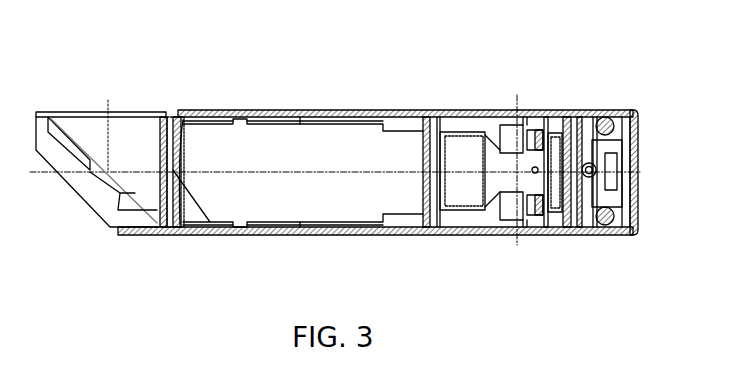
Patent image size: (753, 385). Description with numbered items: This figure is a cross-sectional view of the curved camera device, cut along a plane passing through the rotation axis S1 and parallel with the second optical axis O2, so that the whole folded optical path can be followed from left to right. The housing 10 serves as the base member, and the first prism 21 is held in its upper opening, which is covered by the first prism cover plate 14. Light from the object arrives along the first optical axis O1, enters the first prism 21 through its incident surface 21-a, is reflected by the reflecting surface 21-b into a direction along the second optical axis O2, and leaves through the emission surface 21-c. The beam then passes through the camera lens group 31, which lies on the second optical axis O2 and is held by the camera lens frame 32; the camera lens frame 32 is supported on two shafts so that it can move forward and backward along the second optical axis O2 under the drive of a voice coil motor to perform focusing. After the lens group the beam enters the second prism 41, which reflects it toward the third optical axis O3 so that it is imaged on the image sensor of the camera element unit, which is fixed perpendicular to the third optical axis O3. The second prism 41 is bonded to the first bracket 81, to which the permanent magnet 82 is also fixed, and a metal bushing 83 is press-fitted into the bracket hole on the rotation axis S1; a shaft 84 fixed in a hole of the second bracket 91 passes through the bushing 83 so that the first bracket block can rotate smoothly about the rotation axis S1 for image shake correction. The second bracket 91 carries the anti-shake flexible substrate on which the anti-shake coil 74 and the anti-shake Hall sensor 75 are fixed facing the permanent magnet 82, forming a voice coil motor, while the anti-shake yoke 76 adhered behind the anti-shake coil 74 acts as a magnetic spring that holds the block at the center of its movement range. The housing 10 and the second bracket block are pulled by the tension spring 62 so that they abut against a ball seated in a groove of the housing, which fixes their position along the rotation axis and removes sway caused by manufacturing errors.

The housing 10 is at (166, 215).
The first prism cover plate 14 is at (82, 188).
The first prism 21 is at (138, 122).
The incident surface 21-a is at (118, 128).
The reflecting surface 21-b is at (103, 210).
The emission surface 21-c is at (197, 222).
The camera lens group 31 is at (299, 140).
The camera lens frame 32 is at (364, 115).
The second prism 41 is at (460, 155).
The anti-shake coil 74 is at (576, 145).
The anti-shake Hall sensor 75 is at (548, 215).
The anti-shake yoke 76 is at (580, 203).
The first bracket 81 is at (500, 150).
The permanent magnet 82 is at (556, 145).
The bushing 83 is at (505, 140).
The shaft 84 is at (522, 118).
The second bracket 91 is at (597, 112).
The tension spring 62 is at (612, 205).
The first optical axis O1 is at (108, 132).
The second optical axis O2 is at (333, 172).
The third optical axis O3 is at (500, 172).
The sensor plane S1 is at (517, 90).